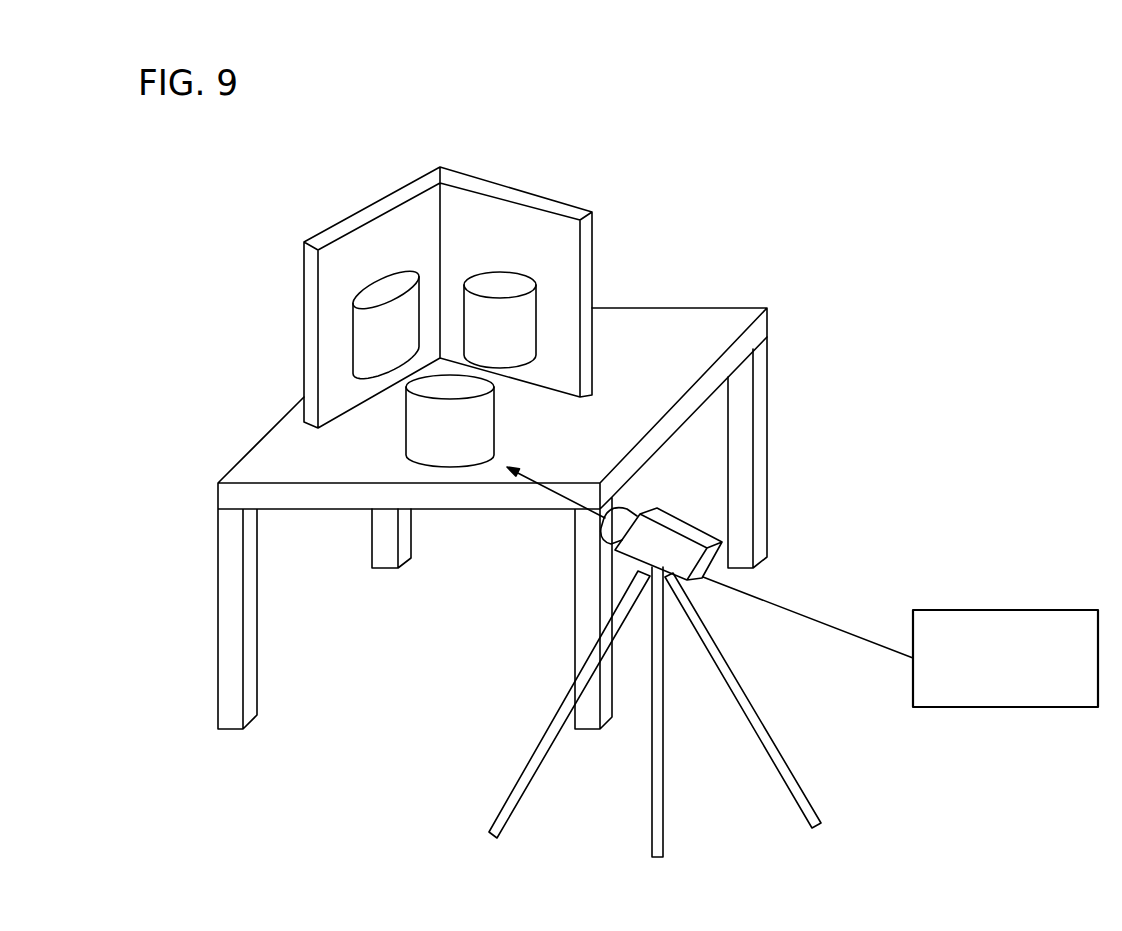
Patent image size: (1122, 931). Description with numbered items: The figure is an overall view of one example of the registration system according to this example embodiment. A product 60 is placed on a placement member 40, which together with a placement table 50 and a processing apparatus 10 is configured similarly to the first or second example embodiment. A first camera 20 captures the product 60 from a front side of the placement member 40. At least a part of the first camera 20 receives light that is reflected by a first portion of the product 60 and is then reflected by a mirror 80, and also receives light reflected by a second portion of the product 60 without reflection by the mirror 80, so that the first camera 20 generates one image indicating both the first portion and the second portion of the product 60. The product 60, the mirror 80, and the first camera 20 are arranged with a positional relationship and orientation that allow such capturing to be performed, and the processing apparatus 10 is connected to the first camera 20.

The processing apparatus 10 is at (1065, 620).
The first camera 20 is at (685, 525).
The placement member 40 is at (707, 326).
The placement table 50 is at (762, 362).
The product 60 is at (405, 448).
The mirror 80 is at (350, 250).